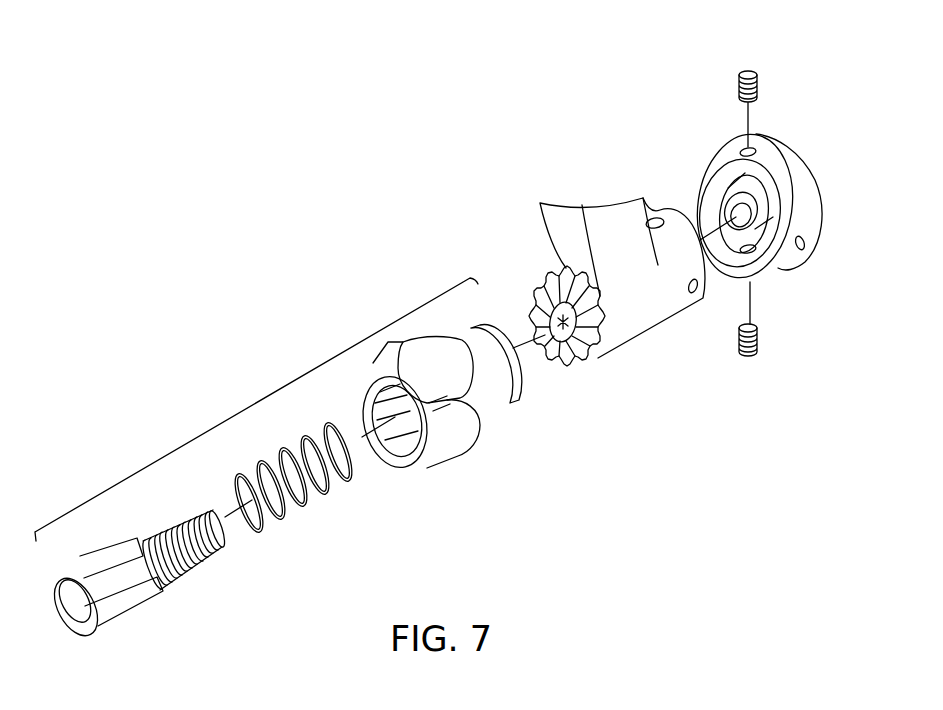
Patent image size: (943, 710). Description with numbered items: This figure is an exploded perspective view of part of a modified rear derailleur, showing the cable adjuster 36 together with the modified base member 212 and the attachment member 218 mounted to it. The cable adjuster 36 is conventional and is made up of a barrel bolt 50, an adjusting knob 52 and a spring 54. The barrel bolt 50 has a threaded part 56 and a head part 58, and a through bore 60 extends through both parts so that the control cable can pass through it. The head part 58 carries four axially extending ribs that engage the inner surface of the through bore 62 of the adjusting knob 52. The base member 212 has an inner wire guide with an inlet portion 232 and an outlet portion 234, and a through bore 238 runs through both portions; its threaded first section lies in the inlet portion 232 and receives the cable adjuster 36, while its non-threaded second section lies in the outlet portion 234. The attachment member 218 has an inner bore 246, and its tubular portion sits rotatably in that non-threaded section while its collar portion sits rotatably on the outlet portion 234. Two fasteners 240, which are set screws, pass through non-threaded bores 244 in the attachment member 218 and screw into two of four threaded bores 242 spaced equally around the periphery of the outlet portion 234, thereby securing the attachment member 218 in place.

The cable adjuster 36 is at (228, 420).
The barrel bolt 50 is at (135, 586).
The adjusting knob 52 is at (421, 413).
The spring 54 is at (309, 509).
The threaded part 56 is at (185, 549).
The head part 58 is at (121, 582).
The through bore 60 is at (75, 601).
The through bore 62 is at (390, 447).
The base member 212 is at (599, 261).
The attachment member 218 is at (746, 229).
The inlet portion 232 is at (579, 340).
The outlet portion 234 is at (668, 212).
The through bore 238 is at (559, 341).
The fasteners 240 is at (738, 81).
The threaded bores 242 is at (697, 293).
The non-threaded bores 244 is at (745, 150).
The inner bore 246 is at (727, 217).